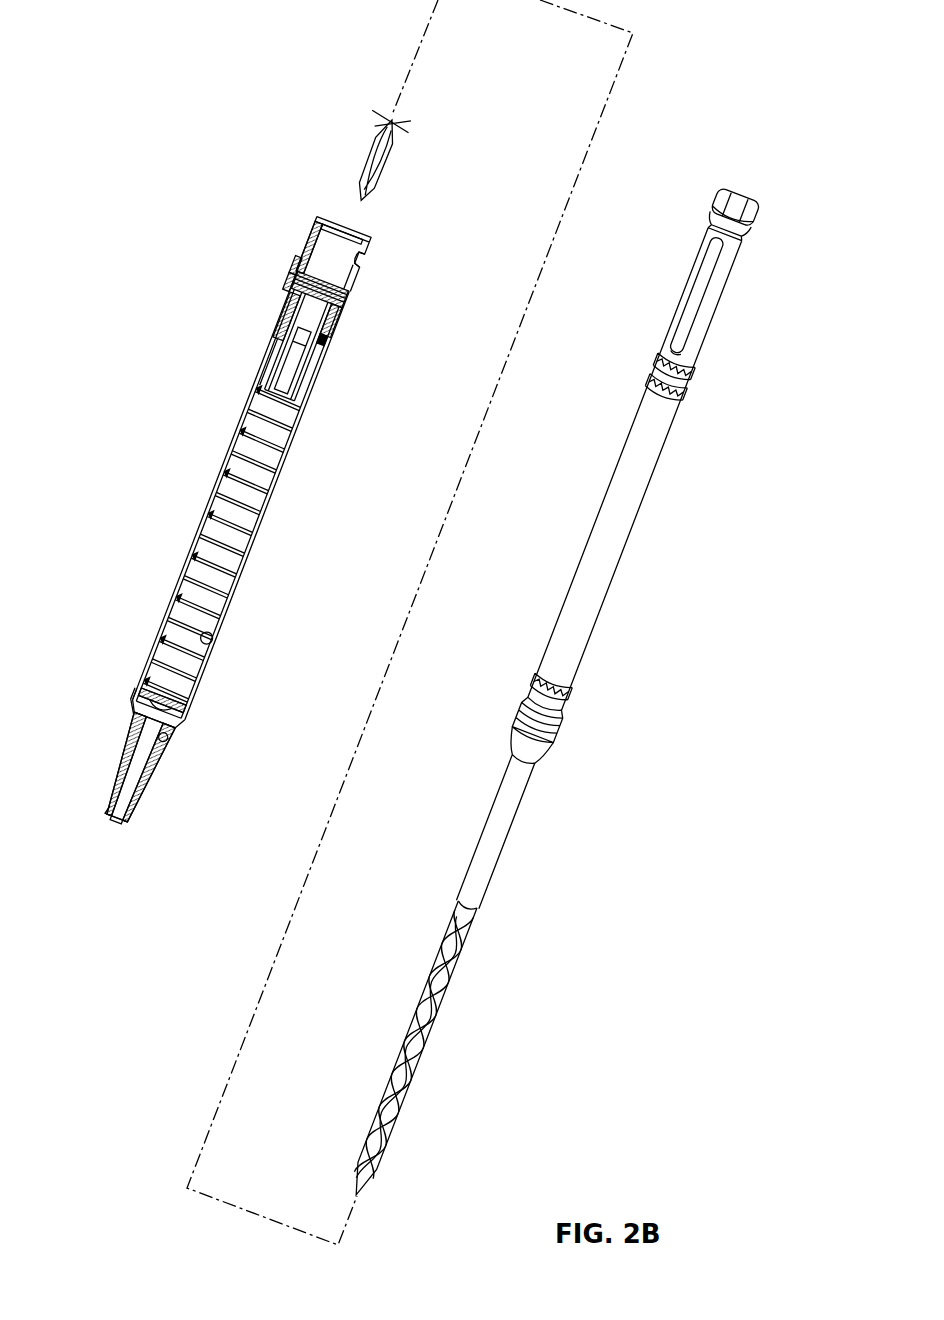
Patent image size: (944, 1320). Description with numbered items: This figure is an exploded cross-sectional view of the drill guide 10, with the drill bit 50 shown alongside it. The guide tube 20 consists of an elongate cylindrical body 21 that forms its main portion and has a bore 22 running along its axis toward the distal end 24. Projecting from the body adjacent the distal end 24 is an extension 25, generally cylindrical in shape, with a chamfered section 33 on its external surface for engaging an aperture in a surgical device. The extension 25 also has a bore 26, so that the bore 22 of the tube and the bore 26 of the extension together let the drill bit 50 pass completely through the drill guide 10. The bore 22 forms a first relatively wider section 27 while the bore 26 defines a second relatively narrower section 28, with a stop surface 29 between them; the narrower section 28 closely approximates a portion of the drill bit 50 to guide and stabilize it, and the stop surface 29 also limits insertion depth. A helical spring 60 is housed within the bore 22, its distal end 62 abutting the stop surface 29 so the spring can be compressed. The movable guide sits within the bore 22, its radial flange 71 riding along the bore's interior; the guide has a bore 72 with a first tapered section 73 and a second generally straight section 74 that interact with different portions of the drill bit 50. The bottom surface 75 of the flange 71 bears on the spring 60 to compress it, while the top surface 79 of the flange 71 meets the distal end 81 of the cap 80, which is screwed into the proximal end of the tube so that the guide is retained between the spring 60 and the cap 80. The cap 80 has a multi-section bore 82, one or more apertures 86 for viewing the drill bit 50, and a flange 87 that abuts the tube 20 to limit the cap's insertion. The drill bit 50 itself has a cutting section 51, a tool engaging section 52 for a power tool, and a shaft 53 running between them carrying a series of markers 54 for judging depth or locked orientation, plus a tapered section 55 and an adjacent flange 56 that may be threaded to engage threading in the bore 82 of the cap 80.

The drill guide 10 is at (163, 346).
The guide tube 20 is at (262, 560).
The elongate cylindrical body 21 is at (292, 462).
The bore 22 is at (250, 497).
The distal end 24 is at (128, 824).
The extension 25 is at (166, 760).
The bore 26 is at (138, 782).
The first relatively wider section 27 is at (215, 632).
The second relatively narrower section 28 is at (165, 728).
The stop surface 29 is at (142, 700).
The chamfered section 33 is at (107, 815).
The spring 60 is at (258, 487).
The distal end 62 is at (172, 705).
The radial flange 71 is at (340, 318).
The bore 72 is at (314, 362).
The first tapered section 73 is at (348, 285).
The second generally straight section 74 is at (300, 357).
The bottom surface 75 is at (282, 313).
The top surface 79 is at (296, 275).
The cap 80 is at (316, 217).
The distal end 81 is at (326, 337).
The bore 82 is at (357, 232).
The apertures 86 is at (357, 251).
The flange 87 is at (300, 256).
The drill bit 50 is at (651, 277).
The cutting section 51 is at (370, 150).
The tool engaging section 52 is at (722, 190).
The shaft 53 is at (626, 530).
The markers 54 is at (670, 365).
The tapered section 55 is at (527, 755).
The flange 56 is at (546, 728).